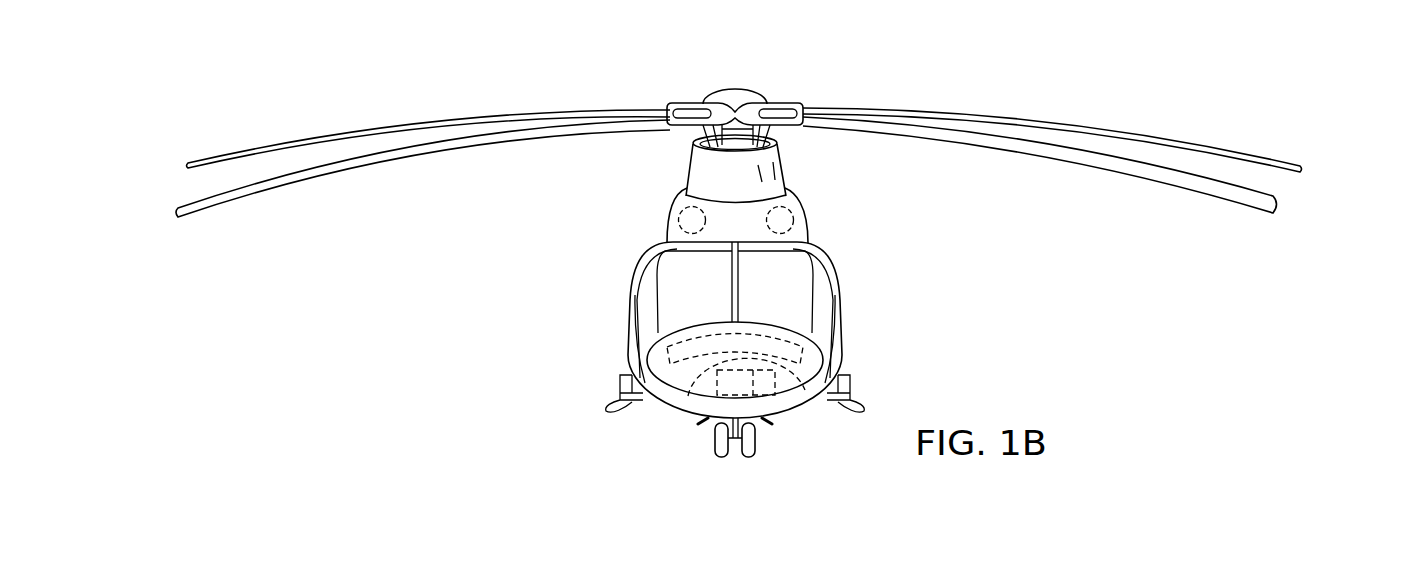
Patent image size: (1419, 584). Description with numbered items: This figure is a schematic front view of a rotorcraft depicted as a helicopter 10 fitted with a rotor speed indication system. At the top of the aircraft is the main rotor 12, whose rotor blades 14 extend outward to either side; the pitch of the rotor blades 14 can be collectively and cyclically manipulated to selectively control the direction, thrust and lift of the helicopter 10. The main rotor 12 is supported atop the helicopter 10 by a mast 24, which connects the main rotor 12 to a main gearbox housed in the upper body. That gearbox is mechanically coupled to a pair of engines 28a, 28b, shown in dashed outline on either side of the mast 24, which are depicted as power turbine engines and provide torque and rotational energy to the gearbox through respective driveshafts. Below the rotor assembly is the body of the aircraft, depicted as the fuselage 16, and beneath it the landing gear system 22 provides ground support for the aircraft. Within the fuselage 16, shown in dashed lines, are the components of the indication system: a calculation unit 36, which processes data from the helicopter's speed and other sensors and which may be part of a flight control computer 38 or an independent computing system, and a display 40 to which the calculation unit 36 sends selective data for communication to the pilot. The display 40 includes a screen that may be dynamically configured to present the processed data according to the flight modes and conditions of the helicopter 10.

The helicopter 10 is at (598, 67).
The main rotor 12 is at (1096, 128).
The rotor blades 14 is at (1096, 170).
The fuselage 16 is at (662, 415).
The landing gear system 22 is at (757, 442).
The mast 24 is at (733, 140).
The engine 28a is at (805, 212).
The engine 28b is at (668, 212).
The calculation unit 36 is at (805, 389).
The flight control computer 38 is at (689, 396).
The display 40 is at (754, 332).